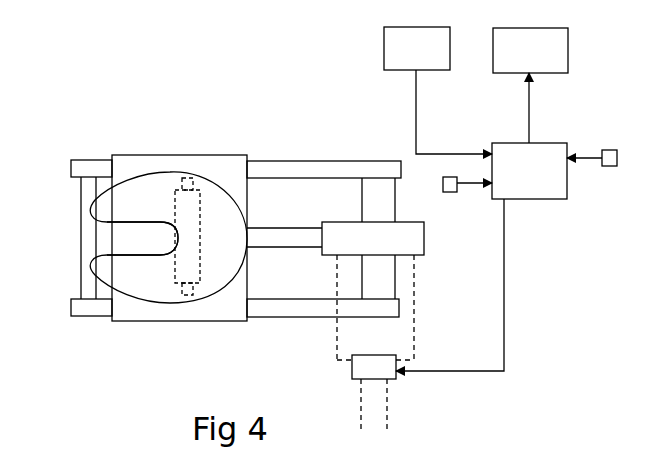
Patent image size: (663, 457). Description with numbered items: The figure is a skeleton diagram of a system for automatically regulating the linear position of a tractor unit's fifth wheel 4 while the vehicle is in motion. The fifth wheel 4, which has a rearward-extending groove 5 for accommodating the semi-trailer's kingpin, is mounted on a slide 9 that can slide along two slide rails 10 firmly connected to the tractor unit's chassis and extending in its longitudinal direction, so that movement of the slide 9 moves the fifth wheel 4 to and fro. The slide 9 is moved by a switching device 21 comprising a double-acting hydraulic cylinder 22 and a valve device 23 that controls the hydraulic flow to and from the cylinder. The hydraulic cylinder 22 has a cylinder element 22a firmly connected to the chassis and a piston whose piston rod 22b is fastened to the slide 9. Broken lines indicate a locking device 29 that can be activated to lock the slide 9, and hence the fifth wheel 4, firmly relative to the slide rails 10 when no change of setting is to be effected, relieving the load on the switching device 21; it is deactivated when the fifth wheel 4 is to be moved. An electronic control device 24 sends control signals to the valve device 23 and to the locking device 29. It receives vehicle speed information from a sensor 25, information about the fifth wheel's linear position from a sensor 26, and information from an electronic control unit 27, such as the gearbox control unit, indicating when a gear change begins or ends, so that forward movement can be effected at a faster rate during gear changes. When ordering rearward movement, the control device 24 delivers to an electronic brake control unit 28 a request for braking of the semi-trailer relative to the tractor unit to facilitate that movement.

The fifth wheel 4 is at (152, 187).
The groove 5 is at (125, 235).
The slide 9 is at (213, 307).
The slide rails 10 is at (280, 165).
The switching device 21 is at (415, 393).
The double-acting hydraulic cylinder 22 is at (336, 207).
The cylinder element 22a is at (424, 240).
The piston rod 22b is at (282, 237).
The valve device 23 is at (358, 367).
The electronic control device 24 is at (548, 193).
The sensor 25 is at (610, 166).
The sensor 26 is at (448, 192).
The electronic control unit 27 is at (384, 45).
The electronic brake control unit 28 is at (570, 52).
The locking device 29 is at (183, 268).